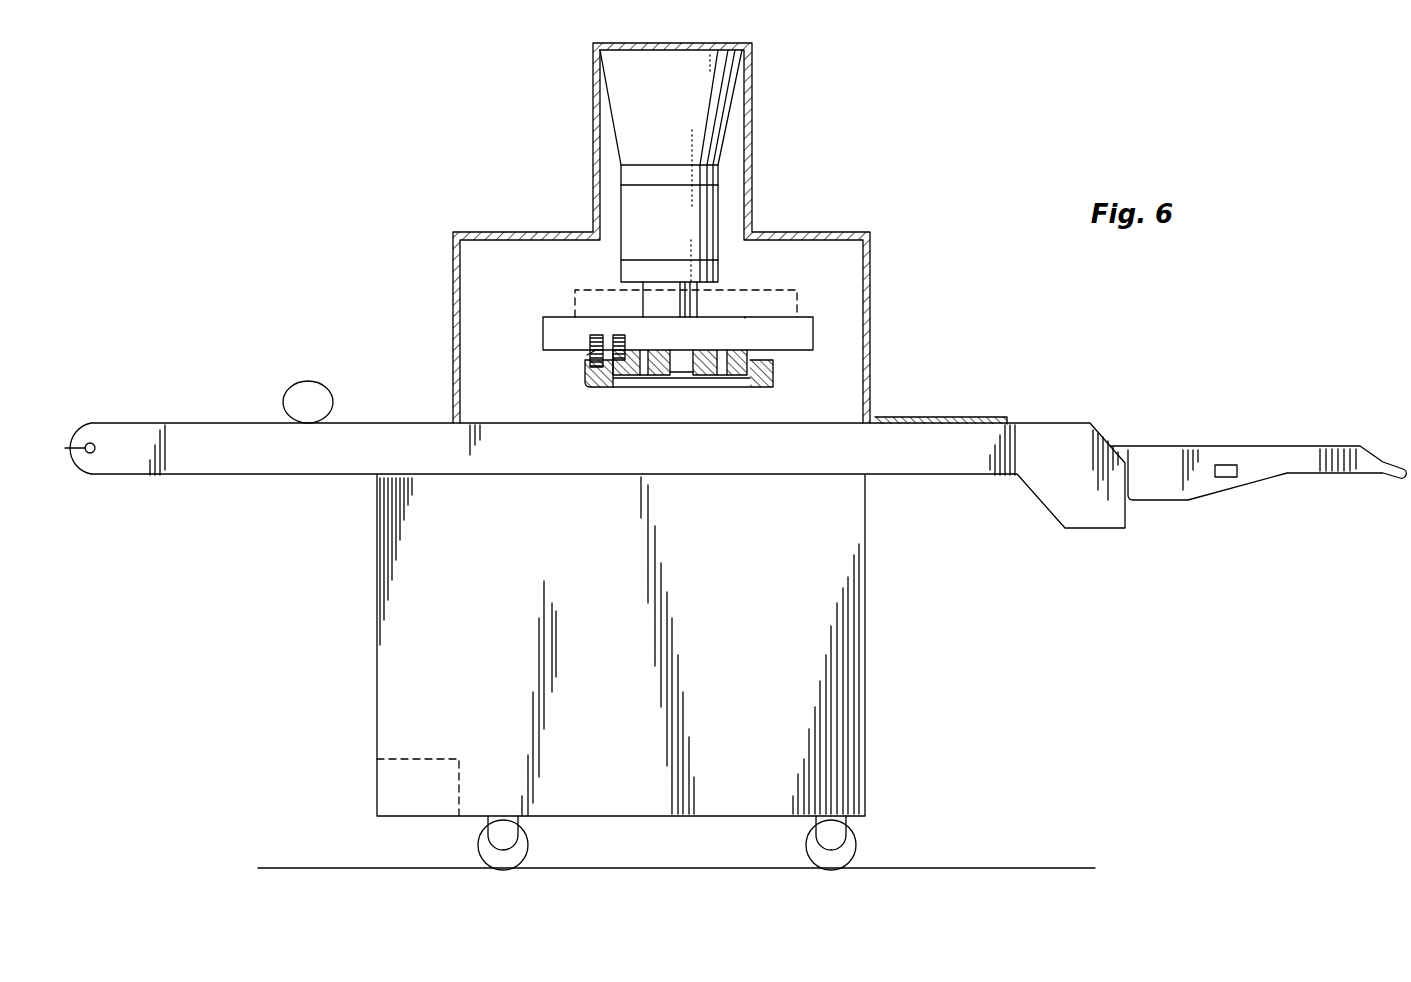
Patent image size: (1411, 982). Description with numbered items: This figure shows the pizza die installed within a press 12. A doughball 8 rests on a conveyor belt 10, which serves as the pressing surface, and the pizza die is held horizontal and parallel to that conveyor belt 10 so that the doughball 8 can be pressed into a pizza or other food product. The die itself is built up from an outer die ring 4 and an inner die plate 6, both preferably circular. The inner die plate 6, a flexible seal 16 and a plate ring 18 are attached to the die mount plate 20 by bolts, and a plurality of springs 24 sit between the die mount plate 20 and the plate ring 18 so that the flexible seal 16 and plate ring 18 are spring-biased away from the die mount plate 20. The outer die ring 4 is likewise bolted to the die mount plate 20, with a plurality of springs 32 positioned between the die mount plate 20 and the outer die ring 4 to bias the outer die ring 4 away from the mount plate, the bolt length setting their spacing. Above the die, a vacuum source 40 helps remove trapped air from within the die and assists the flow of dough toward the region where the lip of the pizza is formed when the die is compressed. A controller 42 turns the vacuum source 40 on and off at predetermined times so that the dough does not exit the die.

The press 12 is at (818, 175).
The vacuum source 40 is at (575, 291).
The springs 24 is at (620, 335).
The die mount plate 20 is at (745, 318).
The plate ring 18 is at (757, 355).
The flexible seal 16 is at (750, 357).
The outer die ring 4 is at (773, 385).
The inner die plate 6 is at (632, 380).
The springs 32 is at (587, 355).
The doughball 8 is at (288, 390).
The conveyor belt 10 is at (390, 423).
The controller 42 is at (417, 792).